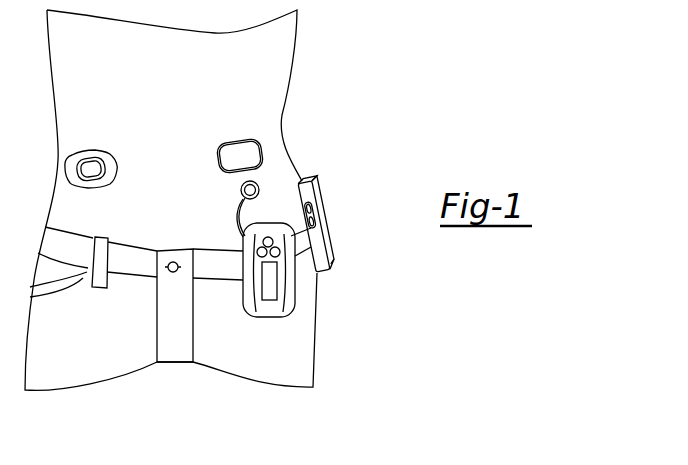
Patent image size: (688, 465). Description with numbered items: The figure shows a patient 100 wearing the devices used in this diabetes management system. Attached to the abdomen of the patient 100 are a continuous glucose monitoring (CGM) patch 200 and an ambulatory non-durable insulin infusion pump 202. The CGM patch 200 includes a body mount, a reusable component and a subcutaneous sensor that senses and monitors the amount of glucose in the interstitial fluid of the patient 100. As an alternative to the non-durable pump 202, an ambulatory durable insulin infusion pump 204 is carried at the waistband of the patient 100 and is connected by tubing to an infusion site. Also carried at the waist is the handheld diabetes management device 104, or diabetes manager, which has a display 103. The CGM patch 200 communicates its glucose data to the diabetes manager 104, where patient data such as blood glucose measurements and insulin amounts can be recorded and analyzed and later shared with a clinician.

The patient 100 is at (278, 75).
The display 103 is at (318, 214).
The handheld diabetes management device 104 is at (330, 238).
The continuous glucose monitoring (CGM) patch 200 is at (94, 150).
The ambulatory non-durable insulin infusion pump 202 is at (246, 139).
The ambulatory durable insulin infusion pump 204 is at (292, 294).